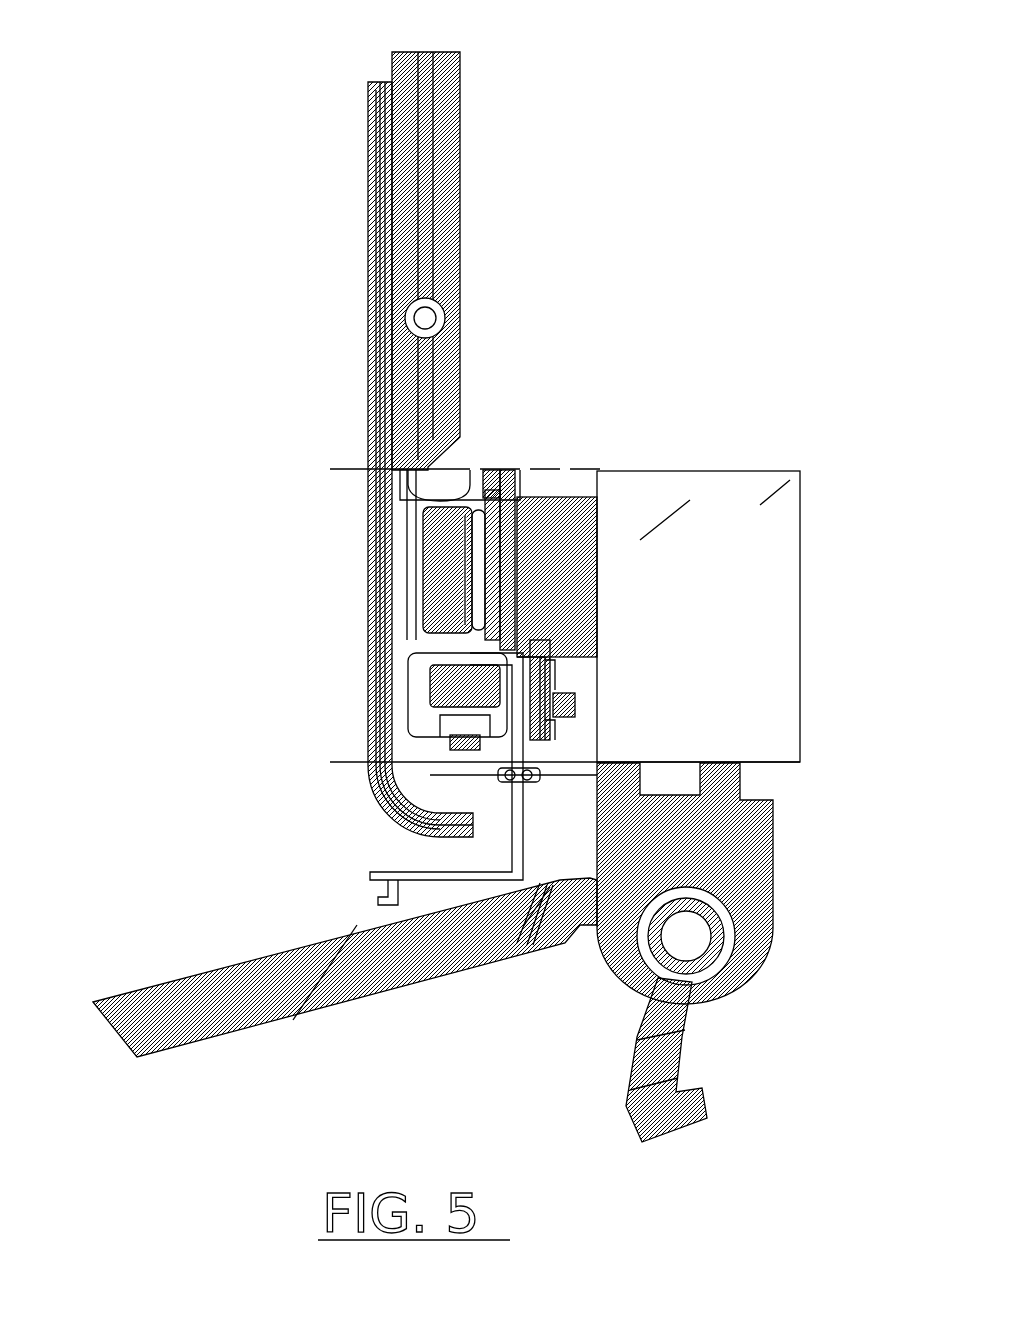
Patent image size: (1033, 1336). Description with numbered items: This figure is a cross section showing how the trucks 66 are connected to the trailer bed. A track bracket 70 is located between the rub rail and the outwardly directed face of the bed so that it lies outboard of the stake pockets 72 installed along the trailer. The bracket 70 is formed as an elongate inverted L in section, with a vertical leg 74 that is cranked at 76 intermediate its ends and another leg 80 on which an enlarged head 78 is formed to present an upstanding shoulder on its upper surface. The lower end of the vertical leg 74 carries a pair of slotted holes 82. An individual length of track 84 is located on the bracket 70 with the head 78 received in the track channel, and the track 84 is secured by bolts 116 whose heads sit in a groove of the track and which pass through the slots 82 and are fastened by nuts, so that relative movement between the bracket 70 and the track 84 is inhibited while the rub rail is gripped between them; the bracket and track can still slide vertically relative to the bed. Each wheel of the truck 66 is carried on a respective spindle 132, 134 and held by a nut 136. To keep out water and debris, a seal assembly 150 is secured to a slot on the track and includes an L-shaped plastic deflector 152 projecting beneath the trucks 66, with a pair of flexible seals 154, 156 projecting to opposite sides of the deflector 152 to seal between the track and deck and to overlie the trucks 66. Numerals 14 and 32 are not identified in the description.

The latch body 14 is at (392, 660).
The door panel frame strip 32 is at (360, 585).
The truck 66 is at (352, 506).
The track bracket 70 is at (500, 490).
The stake pocket 72 is at (568, 604).
The vertical leg 74 is at (540, 690).
The crank 76 is at (540, 640).
The enlarged head 78 is at (468, 470).
The other leg 80 is at (517, 503).
The slotted holes 82 is at (560, 728).
The track 84 is at (372, 470).
The bolt 116 is at (560, 692).
The spindle 132 is at (407, 545).
The spindle 134 is at (370, 752).
The nut 136 is at (372, 612).
The seal assembly 150 is at (520, 855).
The L-shaped plastic deflector 152 is at (457, 882).
The flexible seal 154 is at (640, 745).
The flexible seal 156 is at (470, 783).